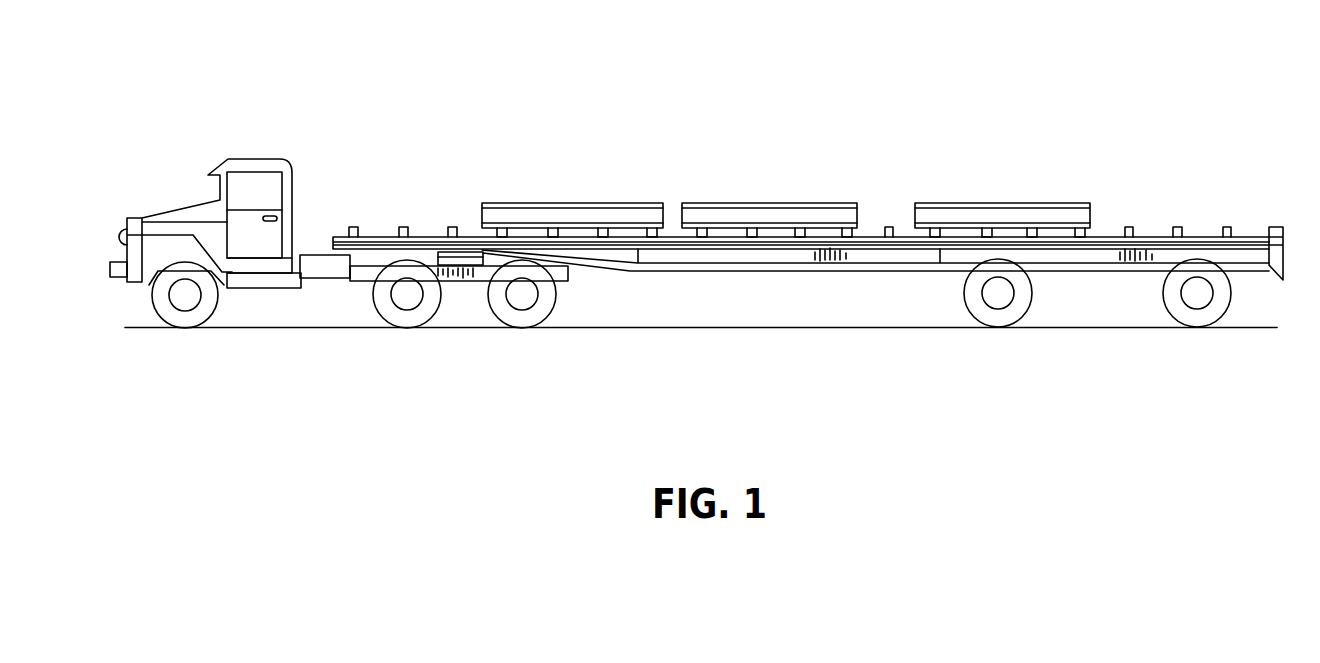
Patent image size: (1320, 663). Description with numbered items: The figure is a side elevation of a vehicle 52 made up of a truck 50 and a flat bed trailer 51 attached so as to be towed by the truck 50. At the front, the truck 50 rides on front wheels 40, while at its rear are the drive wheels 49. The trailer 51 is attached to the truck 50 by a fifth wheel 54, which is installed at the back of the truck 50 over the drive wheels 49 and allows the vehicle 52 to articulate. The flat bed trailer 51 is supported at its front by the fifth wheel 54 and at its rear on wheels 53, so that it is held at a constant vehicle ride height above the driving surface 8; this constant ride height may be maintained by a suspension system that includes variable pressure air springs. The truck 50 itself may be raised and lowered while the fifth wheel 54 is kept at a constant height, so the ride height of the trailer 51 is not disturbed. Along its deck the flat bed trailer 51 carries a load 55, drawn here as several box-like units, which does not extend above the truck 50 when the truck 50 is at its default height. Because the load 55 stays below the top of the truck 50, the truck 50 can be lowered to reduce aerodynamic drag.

The driving surface 8 is at (743, 328).
The front wheels 40 is at (183, 317).
The drive wheels 49 is at (535, 317).
The truck 50 is at (193, 182).
The flat bed trailer 51 is at (773, 250).
The vehicle 52 is at (615, 90).
The wheels 53 is at (1172, 293).
The fifth wheel 54 is at (462, 279).
The load 55 is at (663, 203).